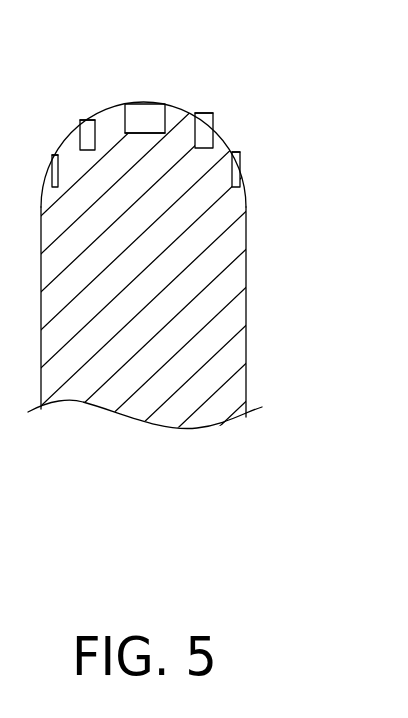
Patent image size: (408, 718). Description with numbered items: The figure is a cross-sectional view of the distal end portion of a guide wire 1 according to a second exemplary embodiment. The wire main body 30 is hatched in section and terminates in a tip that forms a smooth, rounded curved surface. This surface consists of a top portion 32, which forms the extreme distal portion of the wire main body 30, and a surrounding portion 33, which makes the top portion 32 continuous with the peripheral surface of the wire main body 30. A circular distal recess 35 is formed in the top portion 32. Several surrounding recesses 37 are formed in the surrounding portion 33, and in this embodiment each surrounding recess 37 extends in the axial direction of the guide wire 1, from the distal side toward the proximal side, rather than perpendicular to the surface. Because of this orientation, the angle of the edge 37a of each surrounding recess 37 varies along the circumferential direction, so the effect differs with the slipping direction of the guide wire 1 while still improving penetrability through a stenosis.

The guide wire 1 is at (246, 371).
The wire main body 30 is at (246, 328).
The top portion 32 is at (147, 103).
The surrounding portion 33 is at (223, 138).
The distal recess 35 is at (145, 134).
The surrounding recess 37 is at (236, 187).
The edge 37a is at (196, 113).